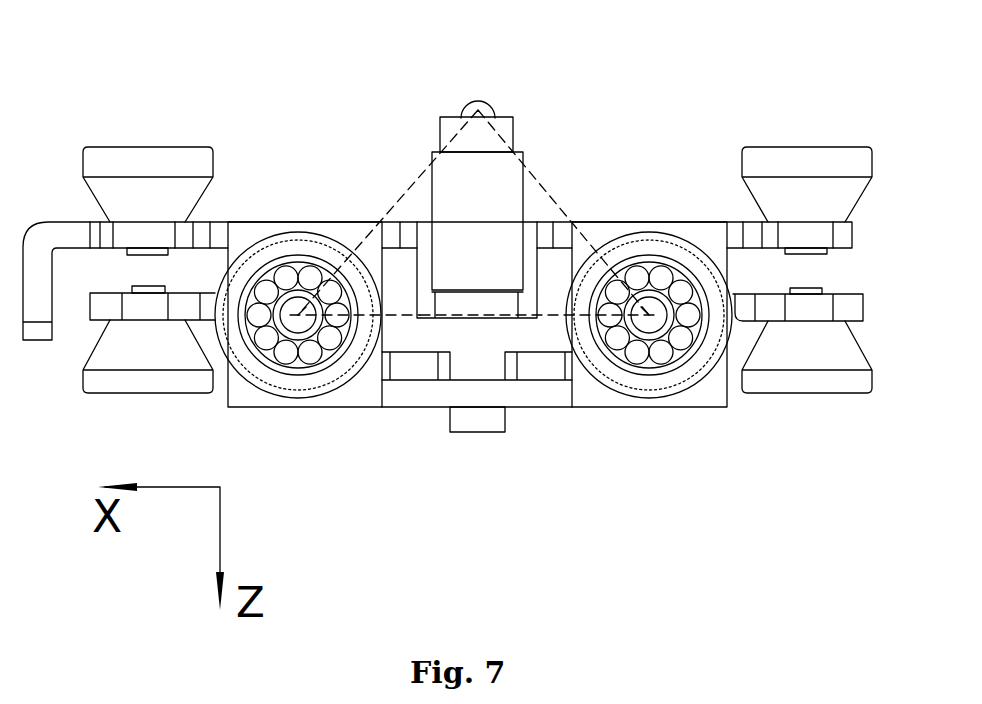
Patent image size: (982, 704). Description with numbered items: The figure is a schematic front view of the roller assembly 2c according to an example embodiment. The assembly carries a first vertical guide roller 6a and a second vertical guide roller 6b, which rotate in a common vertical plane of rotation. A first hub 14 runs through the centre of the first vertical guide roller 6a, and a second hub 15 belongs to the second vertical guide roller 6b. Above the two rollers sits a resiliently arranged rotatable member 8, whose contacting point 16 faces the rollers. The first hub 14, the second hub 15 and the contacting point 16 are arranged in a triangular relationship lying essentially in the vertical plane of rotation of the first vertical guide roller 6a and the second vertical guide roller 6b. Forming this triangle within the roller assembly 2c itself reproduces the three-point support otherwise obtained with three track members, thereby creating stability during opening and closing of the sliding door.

The roller assembly 2c is at (648, 74).
The resiliently arranged rotatable member 8 is at (465, 108).
The contacting point 16 is at (478, 106).
The first vertical guide roller 6a is at (298, 231).
The second vertical guide roller 6b is at (656, 231).
The first hub 14 is at (297, 318).
The second hub 15 is at (651, 318).